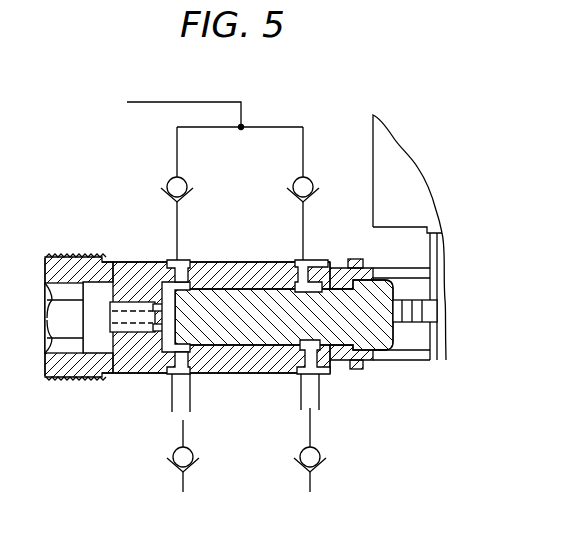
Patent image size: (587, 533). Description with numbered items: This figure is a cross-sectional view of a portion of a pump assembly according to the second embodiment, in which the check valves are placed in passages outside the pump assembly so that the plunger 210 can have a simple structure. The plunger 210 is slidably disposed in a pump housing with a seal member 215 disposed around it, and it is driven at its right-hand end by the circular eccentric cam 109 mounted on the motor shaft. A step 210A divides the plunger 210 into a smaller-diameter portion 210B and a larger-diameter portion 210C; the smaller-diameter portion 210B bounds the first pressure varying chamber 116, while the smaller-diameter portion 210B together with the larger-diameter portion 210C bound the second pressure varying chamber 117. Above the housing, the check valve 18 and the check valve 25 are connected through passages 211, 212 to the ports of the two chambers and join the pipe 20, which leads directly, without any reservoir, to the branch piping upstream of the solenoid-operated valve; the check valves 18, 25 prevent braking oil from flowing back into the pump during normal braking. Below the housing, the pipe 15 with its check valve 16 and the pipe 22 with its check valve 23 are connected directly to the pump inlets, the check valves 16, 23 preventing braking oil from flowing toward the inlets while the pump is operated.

The pipe 20 is at (200, 101).
The check valve 18 is at (187, 181).
The check valve 25 is at (311, 181).
The connecting line 211 is at (178, 223).
The connecting line 212 is at (304, 228).
The first pressure varying chamber 116 is at (163, 283).
The second pressure varying chamber 117 is at (320, 262).
The smaller-diameter portion 210B is at (235, 337).
The step 210A is at (342, 363).
The plunger 210 is at (383, 350).
The larger-diameter portion 210C is at (393, 348).
The seal member 215 is at (350, 369).
The eccentric cam 109 is at (422, 322).
The check valve 16 is at (175, 449).
The pipe 15 is at (190, 478).
The check valve 23 is at (303, 450).
The pipe 22 is at (312, 480).